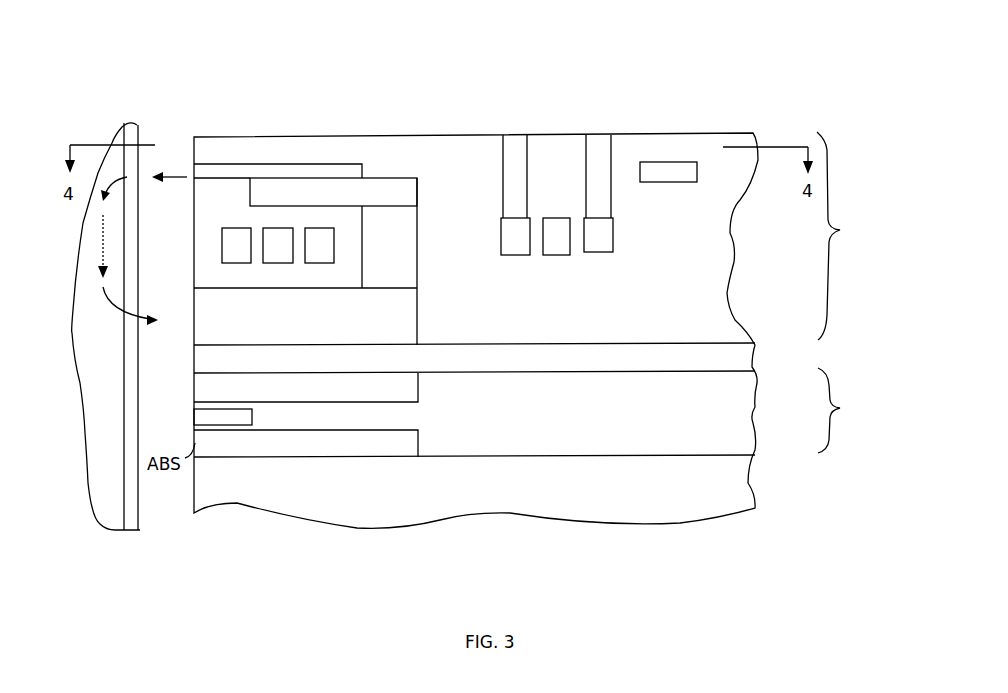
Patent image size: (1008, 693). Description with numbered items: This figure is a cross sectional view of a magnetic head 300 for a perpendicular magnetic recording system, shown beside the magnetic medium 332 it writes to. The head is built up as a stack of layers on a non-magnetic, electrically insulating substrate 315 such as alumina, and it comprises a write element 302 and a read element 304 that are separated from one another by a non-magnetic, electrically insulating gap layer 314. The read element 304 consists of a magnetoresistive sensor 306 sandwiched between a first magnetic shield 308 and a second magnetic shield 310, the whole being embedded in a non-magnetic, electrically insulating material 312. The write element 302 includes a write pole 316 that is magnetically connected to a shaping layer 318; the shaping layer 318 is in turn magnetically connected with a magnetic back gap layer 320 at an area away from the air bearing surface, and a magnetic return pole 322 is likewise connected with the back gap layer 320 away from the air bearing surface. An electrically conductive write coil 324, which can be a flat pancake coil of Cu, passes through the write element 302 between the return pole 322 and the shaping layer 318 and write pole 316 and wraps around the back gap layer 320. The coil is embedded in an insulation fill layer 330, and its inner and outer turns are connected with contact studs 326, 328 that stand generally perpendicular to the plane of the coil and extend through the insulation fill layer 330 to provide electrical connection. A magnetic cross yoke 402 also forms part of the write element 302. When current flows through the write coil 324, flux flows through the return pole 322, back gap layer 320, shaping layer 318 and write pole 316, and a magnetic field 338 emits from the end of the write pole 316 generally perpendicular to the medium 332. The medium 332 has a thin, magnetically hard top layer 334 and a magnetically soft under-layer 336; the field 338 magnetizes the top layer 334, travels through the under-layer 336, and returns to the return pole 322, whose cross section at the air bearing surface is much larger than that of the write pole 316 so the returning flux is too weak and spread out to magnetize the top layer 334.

The magnetic head 300 is at (440, 113).
The write element 302 is at (822, 147).
The read element 304 is at (835, 378).
The magnetoresistive sensor 306 is at (245, 415).
The first magnetic shield 308 is at (331, 441).
The second magnetic shield 310 is at (331, 388).
The non-magnetic, electrically insulating material 312 is at (556, 407).
The non-magnetic, electrically insulating gap layer 314 is at (331, 358).
The non-magnetic, electrically insulating substrate 315 is at (506, 480).
The write pole 316 is at (297, 164).
The shaping layer 318 is at (340, 192).
The magnetic back gap layer 320 is at (400, 253).
The magnetic return pole 322 is at (331, 318).
The write coil 324 is at (233, 263).
The contact stud 326 is at (590, 178).
The contact stud 328 is at (515, 180).
The insulation fill layer 330 is at (266, 217).
The magnetic medium 332 is at (106, 130).
The magnetic hard top layer 334 is at (138, 133).
The magnetically soft under-layer 336 is at (98, 410).
The magnetic field 338 is at (180, 178).
The magnetic cross yoke 402 is at (660, 170).